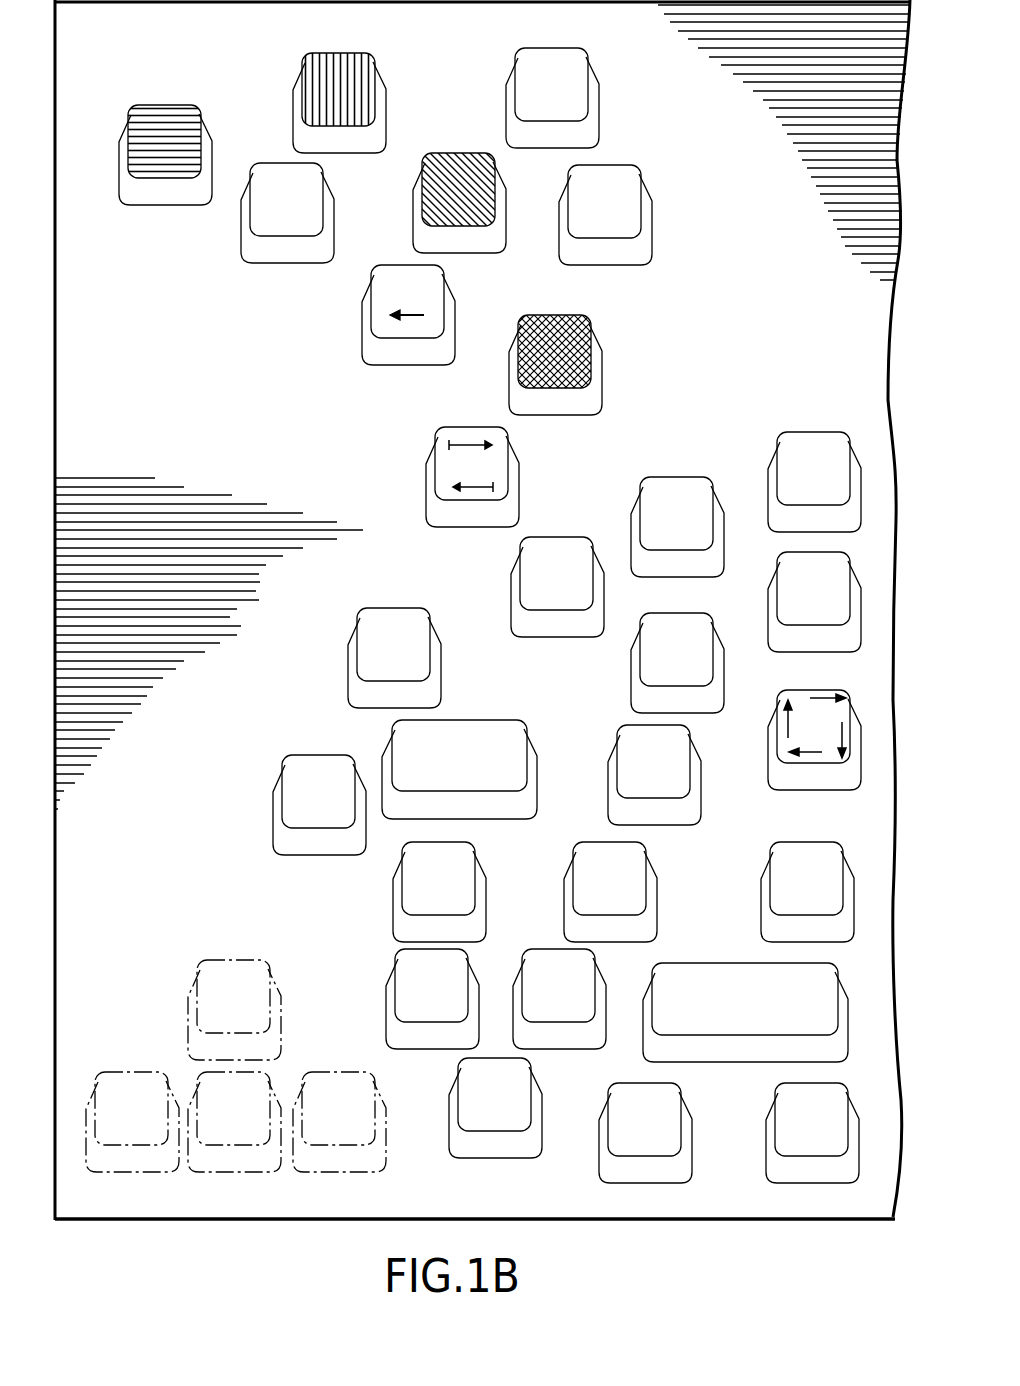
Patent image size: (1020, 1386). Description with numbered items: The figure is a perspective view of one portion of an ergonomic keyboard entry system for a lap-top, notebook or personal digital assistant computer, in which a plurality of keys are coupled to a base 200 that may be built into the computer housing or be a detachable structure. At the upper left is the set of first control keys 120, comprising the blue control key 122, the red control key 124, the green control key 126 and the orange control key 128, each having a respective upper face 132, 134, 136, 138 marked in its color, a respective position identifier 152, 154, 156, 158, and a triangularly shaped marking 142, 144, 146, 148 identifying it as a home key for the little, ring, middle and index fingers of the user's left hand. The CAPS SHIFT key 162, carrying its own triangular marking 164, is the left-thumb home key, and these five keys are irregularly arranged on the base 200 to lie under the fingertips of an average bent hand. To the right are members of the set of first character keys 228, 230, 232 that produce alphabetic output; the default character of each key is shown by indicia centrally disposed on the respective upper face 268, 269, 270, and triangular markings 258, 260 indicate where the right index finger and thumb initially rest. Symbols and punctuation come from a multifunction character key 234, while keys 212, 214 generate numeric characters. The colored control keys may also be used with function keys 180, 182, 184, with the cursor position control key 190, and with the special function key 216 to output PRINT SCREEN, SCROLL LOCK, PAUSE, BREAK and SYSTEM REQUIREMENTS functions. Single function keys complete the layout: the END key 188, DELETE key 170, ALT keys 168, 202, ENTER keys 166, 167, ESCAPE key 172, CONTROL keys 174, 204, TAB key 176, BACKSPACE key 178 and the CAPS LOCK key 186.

The set of first control keys 120 is at (428, 78).
The base 200 is at (118, 400).
The blue control key 122 is at (140, 117).
The upper face 132 is at (140, 117).
The triangularly shaped marking 142 is at (165, 117).
The position identifier 152 is at (145, 118).
The red control key 124 is at (320, 82).
The upper face 134 is at (320, 82).
The triangularly shaped marking 144 is at (341, 82).
The position identifier 154 is at (358, 62).
The green control key 126 is at (448, 168).
The upper face 136 is at (473, 168).
The triangularly shaped marking 146 is at (483, 168).
The position identifier 156 is at (482, 209).
The orange control key 128 is at (515, 348).
The upper face 138 is at (531, 348).
The triangularly shaped marking 148 is at (531, 348).
The position identifier 158 is at (534, 371).
The CAPS SHIFT key 162 is at (459, 765).
The triangularly shaped marking 164 is at (458, 774).
The ENTER key 166 is at (540, 950).
The ENTER key 167 is at (248, 256).
The ALT key 168 is at (657, 890).
The DELETE key 170 is at (697, 782).
The ESCAPE key 172 is at (274, 808).
The CONTROL key 174 is at (352, 666).
The TAB key 176 is at (517, 490).
The BACKSPACE key 178 is at (363, 335).
The function key 180 is at (455, 1150).
The function key 182 is at (605, 1158).
The function key 184 is at (770, 1158).
The CAPS LOCK key 186 is at (394, 912).
The END key 188 is at (823, 843).
The cursor position control key 190 is at (790, 787).
The ALT key 202 is at (598, 112).
The CONTROL key 204 is at (652, 235).
The numeric character key 212 is at (512, 587).
The numeric character key 214 is at (773, 450).
The special function key 216 is at (388, 1005).
The first character key 228 is at (788, 602).
The first character key 230 is at (768, 1011).
The first character key 232 is at (692, 644).
The multifunction character key 234 is at (672, 480).
The triangularly shaped marking 258 is at (810, 610).
The triangularly shaped marking 260 is at (768, 1035).
The upper face 268 is at (799, 602).
The upper face 269 is at (678, 620).
The upper face 270 is at (798, 1028).